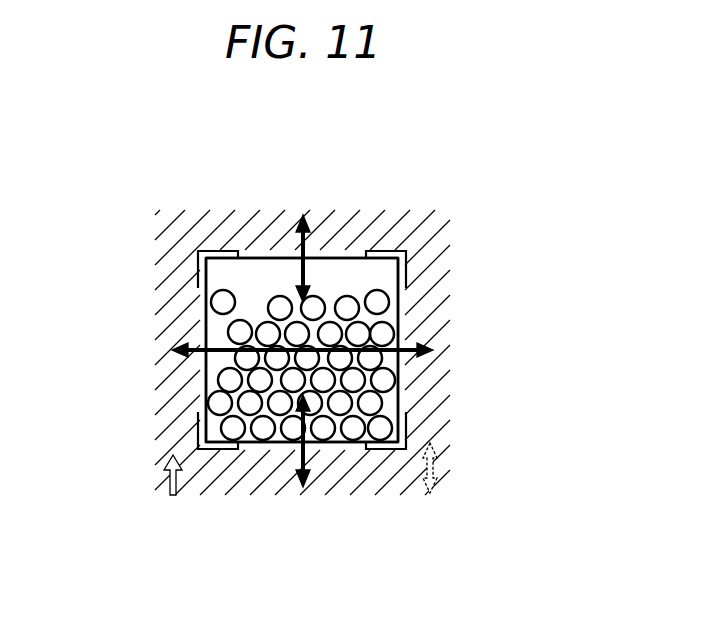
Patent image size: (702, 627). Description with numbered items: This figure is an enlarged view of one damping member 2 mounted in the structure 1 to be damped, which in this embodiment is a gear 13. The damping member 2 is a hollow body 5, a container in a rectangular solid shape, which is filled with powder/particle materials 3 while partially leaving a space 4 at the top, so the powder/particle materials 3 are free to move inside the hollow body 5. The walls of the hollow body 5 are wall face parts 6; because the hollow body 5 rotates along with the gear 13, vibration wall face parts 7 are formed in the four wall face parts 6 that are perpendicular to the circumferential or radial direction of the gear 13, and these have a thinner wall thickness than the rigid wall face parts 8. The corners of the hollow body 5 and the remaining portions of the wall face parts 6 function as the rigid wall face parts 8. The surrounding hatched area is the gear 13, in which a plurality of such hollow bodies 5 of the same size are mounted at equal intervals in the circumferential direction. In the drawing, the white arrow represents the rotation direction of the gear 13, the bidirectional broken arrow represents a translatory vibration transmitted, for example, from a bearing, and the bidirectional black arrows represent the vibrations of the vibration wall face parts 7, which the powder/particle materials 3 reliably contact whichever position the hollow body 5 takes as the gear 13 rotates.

The structure 1 is at (440, 440).
The damping member 2 is at (363, 258).
The powder/particle materials 3 is at (205, 312).
The space 4 is at (332, 270).
The hollow body 5 is at (398, 300).
The wall face parts 6 is at (257, 262).
The vibration wall face part 7 is at (278, 445).
The rigid wall face parts 8 is at (405, 250).
The gear 13 is at (445, 252).